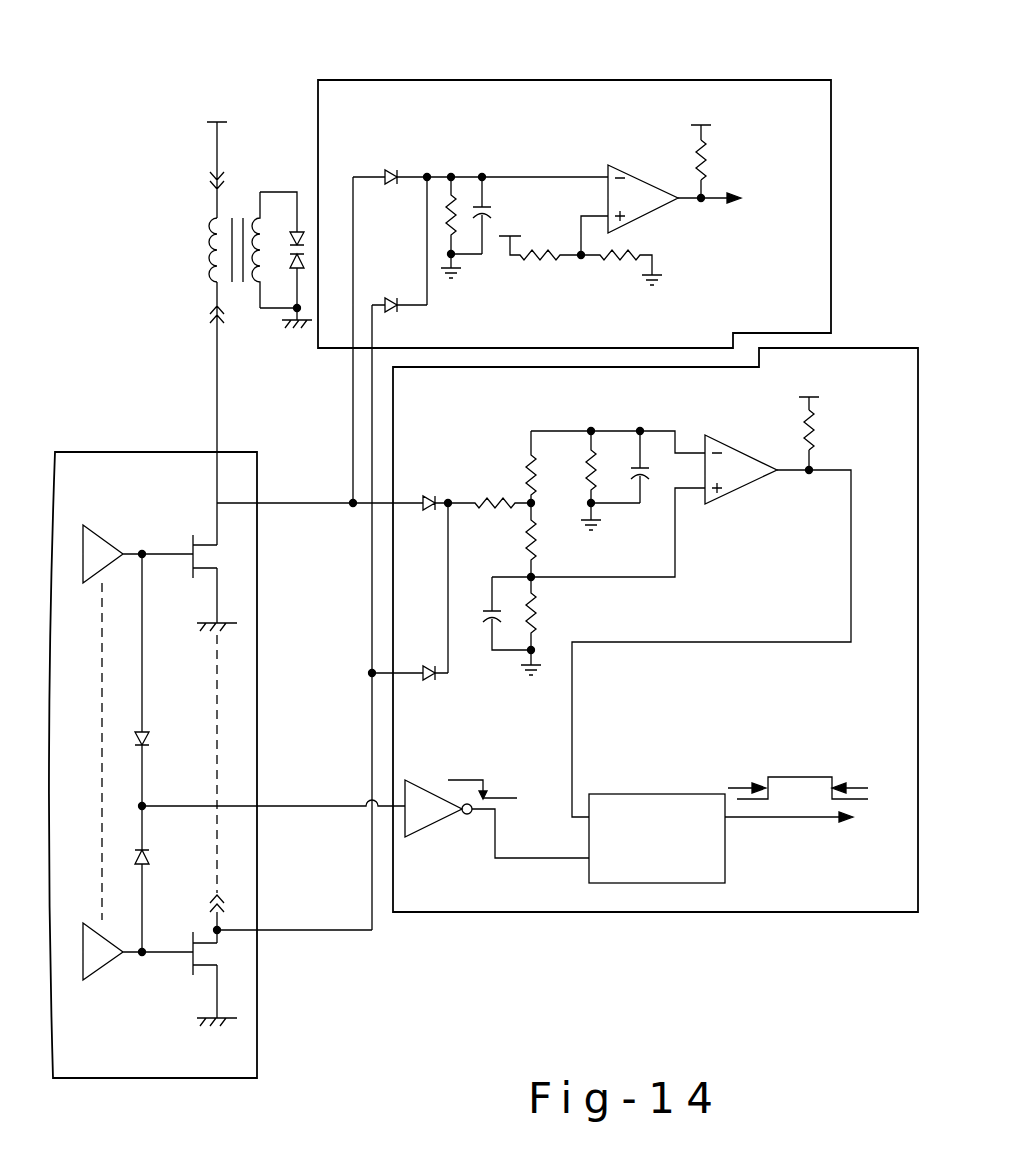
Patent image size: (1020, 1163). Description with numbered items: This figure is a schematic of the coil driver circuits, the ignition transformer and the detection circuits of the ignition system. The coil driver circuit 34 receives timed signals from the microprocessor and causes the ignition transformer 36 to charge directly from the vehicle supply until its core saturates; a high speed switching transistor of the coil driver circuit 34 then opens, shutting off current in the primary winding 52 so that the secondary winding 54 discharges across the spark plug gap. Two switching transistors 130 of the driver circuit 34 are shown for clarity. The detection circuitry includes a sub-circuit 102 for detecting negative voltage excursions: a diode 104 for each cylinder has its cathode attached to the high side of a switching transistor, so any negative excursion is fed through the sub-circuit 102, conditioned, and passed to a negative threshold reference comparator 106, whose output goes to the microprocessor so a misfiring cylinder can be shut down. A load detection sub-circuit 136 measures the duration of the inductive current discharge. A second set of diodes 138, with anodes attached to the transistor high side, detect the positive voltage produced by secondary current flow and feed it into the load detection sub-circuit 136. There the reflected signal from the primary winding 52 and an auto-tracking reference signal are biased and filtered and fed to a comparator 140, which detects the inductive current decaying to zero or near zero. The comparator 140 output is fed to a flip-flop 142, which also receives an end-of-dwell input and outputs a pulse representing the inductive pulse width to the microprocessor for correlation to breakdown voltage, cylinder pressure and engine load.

The coil driver circuit 34 is at (150, 452).
The ignition transformer 36 is at (258, 148).
The primary winding 52 is at (217, 297).
The secondary winding 54 is at (270, 309).
The sub-circuit for detecting negative voltage excursions 102 is at (498, 72).
The diode 104 is at (397, 170).
The negative threshold reference comparator 106 is at (655, 178).
The field effect transistors 130 is at (208, 540).
The load detection sub-circuit 136 is at (488, 930).
The diodes 138 is at (438, 458).
The comparator 140 is at (757, 432).
The flip-flop 142 is at (645, 794).